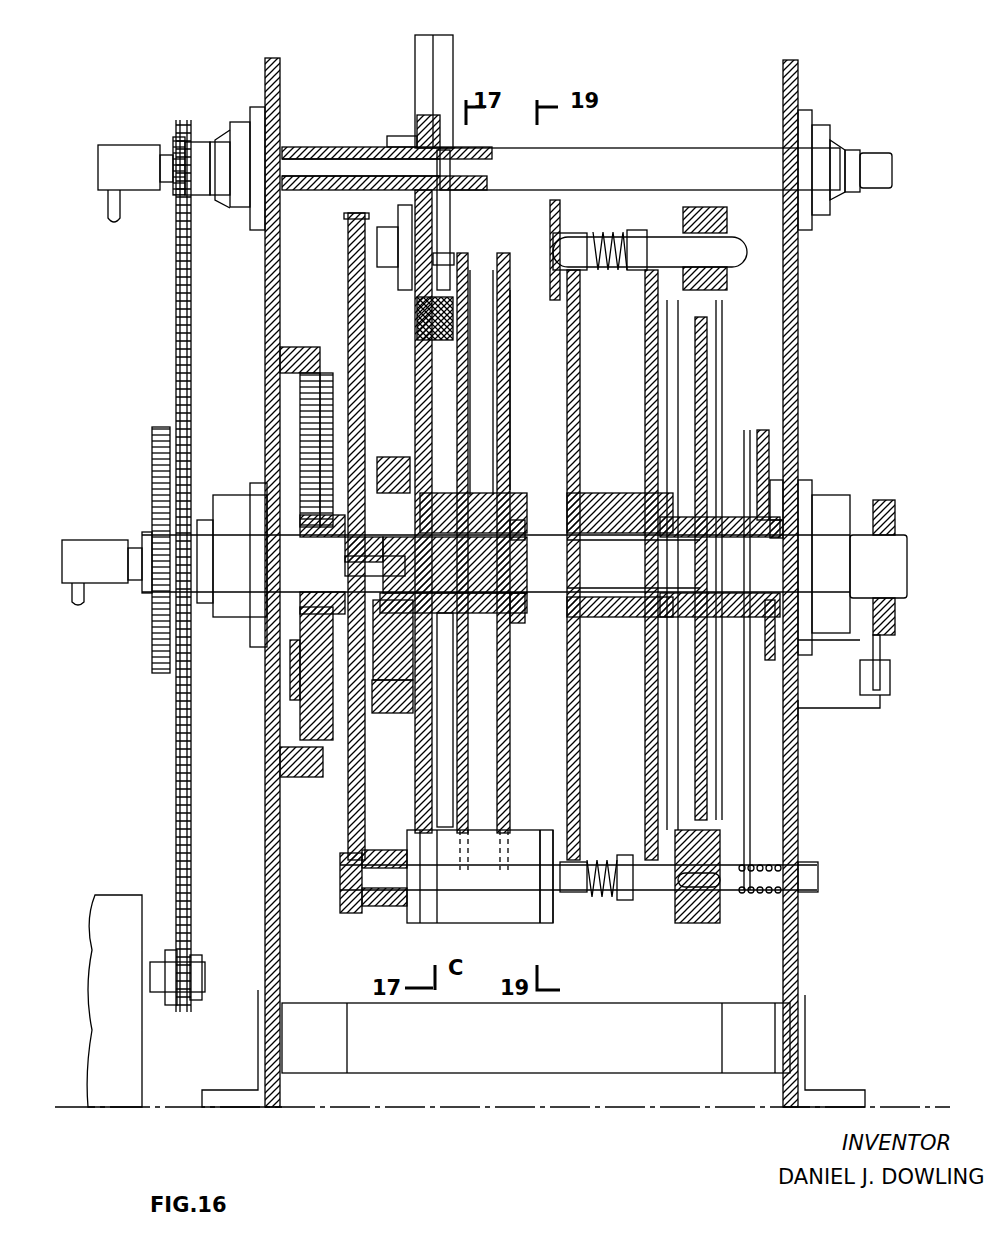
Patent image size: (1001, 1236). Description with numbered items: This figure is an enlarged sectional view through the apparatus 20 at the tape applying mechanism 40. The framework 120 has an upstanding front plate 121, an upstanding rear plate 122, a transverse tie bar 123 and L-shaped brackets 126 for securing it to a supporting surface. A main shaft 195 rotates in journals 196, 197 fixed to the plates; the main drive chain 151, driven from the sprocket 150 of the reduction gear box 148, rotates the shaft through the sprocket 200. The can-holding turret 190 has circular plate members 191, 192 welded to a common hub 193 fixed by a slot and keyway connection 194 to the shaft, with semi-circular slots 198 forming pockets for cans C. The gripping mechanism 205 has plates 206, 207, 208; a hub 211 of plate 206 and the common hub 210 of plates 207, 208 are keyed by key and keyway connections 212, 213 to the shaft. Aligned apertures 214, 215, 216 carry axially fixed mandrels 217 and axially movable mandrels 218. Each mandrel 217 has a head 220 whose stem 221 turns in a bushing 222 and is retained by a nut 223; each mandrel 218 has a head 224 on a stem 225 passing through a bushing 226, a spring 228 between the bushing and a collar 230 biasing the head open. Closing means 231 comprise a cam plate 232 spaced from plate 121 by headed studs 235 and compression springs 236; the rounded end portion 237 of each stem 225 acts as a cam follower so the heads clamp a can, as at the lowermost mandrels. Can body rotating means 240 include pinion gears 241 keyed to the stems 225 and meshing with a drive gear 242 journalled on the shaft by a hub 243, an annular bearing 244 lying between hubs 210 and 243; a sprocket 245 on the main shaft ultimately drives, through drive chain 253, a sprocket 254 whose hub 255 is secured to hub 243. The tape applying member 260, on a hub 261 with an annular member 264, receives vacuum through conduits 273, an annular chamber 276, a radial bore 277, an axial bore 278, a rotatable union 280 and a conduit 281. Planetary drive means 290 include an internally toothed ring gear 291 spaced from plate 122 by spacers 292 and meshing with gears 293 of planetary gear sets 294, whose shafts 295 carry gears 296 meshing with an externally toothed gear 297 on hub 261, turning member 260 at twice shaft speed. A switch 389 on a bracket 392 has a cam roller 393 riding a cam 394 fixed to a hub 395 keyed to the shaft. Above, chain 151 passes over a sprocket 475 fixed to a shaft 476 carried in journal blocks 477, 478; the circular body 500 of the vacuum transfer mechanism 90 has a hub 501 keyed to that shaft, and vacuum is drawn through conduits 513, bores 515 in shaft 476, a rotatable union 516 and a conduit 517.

The apparatus 20 is at (840, 85).
The tape applying mechanism 40 is at (765, 292).
The vacuum transfer mechanism 90 is at (462, 45).
The framework 120 is at (808, 335).
The upstanding front plate 121 is at (800, 820).
The upstanding rear plate 122 is at (265, 838).
The transverse tie bar 123 is at (532, 1050).
The L-shaped bracket 126 is at (222, 1107).
The reduction gear box 148 is at (120, 1078).
The sprocket 150 is at (190, 1000).
The drive chain 151 is at (193, 330).
The can-holding turret 190 is at (535, 180).
The circular plate member 191 is at (475, 380).
The circular plate member 192 is at (512, 415).
The common hub 193 is at (520, 520).
The slot and keyway connection 194 is at (520, 605).
The main shaft 195 is at (496, 563).
The journal 196 is at (225, 500).
The journal 197 is at (825, 515).
The semi-circular slot 198 is at (486, 262).
The sprocket 200 is at (212, 470).
The gripping mechanism 205 is at (680, 950).
The circular plate 206 is at (435, 752).
The circular plate 207 is at (581, 745).
The circular plate 208 is at (646, 740).
The common hub 210 is at (643, 635).
The hub 211 is at (335, 535).
The key and keyway connection 212 is at (335, 592).
The key and keyway connection 213 is at (645, 578).
The aperture 214 is at (360, 905).
The aperture 215 is at (583, 900).
The aperture 216 is at (692, 915).
The axially fixed mandrel 217 is at (404, 920).
The axially movable mandrel 218 is at (583, 830).
The head 220 is at (352, 225).
The stem 221 is at (340, 870).
The bushing 222 is at (438, 818).
The nut 223 is at (365, 855).
The head 224 is at (565, 210).
The stem 225 is at (595, 865).
The bushing 226 is at (545, 905).
The spring 228 is at (605, 240).
The collar 230 is at (635, 272).
The closing means 231 is at (759, 910).
The cam plate 232 is at (752, 775).
The headed stud 235 is at (820, 880).
The compression spring 236 is at (775, 860).
The end portion 237 is at (748, 255).
The can body rotating means 240 is at (800, 748).
The pinion gear 241 is at (722, 205).
The drive gear 242 is at (712, 372).
The hub 243 is at (730, 530).
The annular bearing 244 is at (668, 500).
The sprocket 245 is at (152, 440).
The drive chain 253 is at (757, 435).
The sprocket 254 is at (775, 478).
The hub 255 is at (778, 500).
The tape applying member 260 is at (406, 399).
The hub 261 is at (440, 480).
The annular member 264 is at (422, 365).
The conduit 273 is at (415, 660).
The annular chamber 276 is at (495, 590).
The radial bore 277 is at (495, 540).
The axial bore 278 is at (371, 570).
The rotatable union 280 is at (105, 578).
The conduit 281 is at (86, 600).
The drive means 290 is at (328, 335).
The internally toothed ring gear 291 is at (312, 350).
The spacer 292 is at (280, 760).
The gear 293 is at (315, 430).
The planetary gear set 294 is at (290, 708).
The shaft 295 is at (392, 713).
The gear 296 is at (453, 688).
The externally toothed gear 297 is at (361, 549).
The switch 389 is at (890, 690).
The bracket 392 is at (725, 722).
The cam roller 393 is at (872, 660).
The cam 394 is at (868, 500).
The hub 395 is at (898, 518).
The sprocket 475 is at (198, 145).
The shaft 476 is at (640, 169).
The journal block 477 is at (843, 160).
The journal block 478 is at (245, 125).
The circular body 500 is at (415, 90).
The hub 501 is at (400, 137).
The conduit 513 is at (452, 212).
The bore 515 is at (330, 150).
The rotatable union 516 is at (125, 165).
The conduit 517 is at (122, 210).